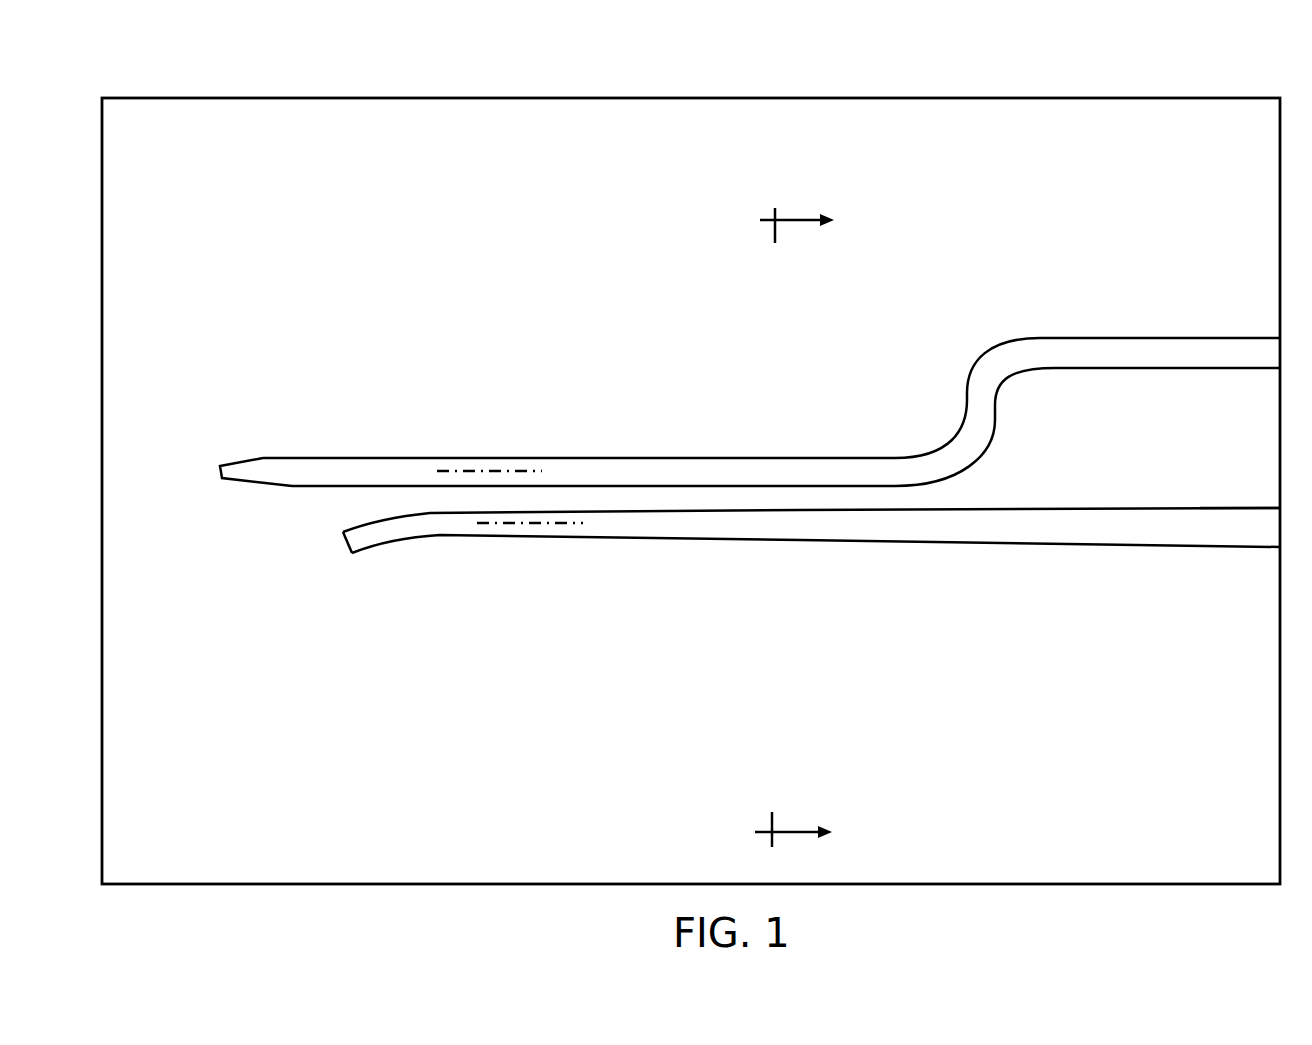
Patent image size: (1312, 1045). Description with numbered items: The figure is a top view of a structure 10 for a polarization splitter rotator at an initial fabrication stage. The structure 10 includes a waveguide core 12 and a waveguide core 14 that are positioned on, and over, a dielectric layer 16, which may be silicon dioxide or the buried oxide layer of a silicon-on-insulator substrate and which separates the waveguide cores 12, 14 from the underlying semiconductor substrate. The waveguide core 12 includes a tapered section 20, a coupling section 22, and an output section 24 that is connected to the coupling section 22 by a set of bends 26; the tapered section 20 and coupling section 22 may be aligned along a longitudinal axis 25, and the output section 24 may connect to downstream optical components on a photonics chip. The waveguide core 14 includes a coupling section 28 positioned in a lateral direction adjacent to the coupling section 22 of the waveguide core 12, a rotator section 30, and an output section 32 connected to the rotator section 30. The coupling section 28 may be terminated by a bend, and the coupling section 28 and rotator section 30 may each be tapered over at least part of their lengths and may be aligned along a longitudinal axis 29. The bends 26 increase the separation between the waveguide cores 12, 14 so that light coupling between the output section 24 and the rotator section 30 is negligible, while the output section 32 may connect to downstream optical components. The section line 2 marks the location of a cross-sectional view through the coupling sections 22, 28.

The structure 10 is at (145, 78).
The waveguide core 12 is at (735, 361).
The waveguide core 14 is at (811, 557).
The dielectric layer 16 is at (181, 772).
The tapered section 20 is at (240, 470).
The coupling section 22 is at (600, 470).
The output section 24 is at (1135, 355).
The longitudinal axis 25 is at (469, 471).
The set of bends 26 is at (983, 420).
The coupling section 28 is at (614, 518).
The longitudinal axis 29 is at (503, 523).
The rotator section 30 is at (1085, 528).
The output section 32 is at (1267, 523).
The section line 2- 2 is at (804, 527).